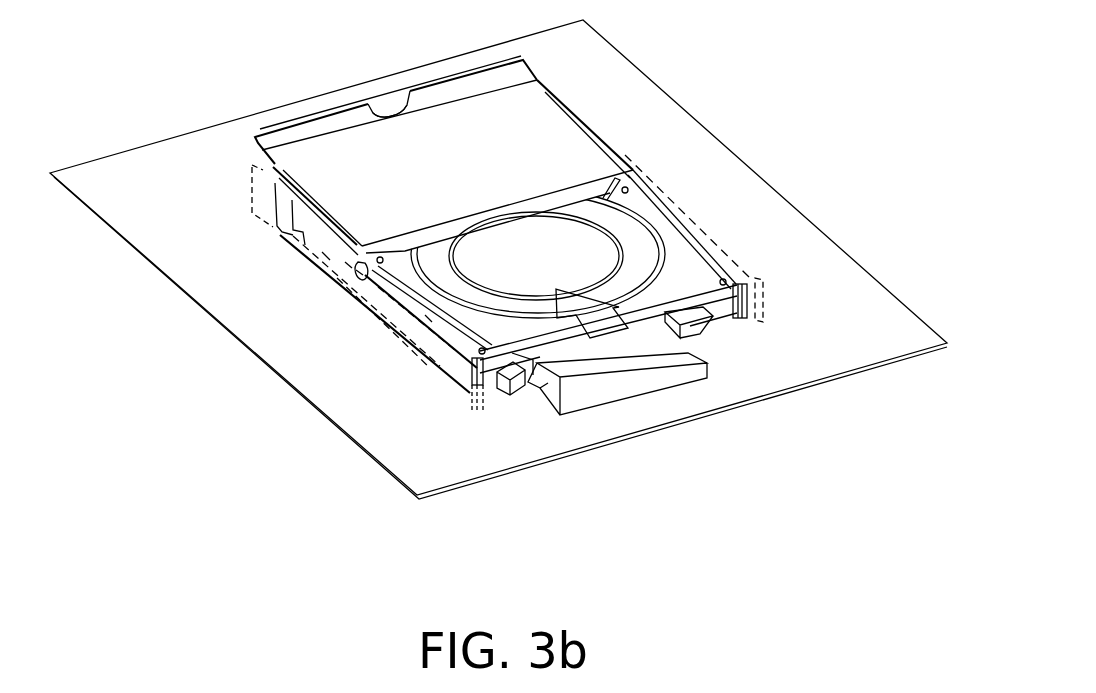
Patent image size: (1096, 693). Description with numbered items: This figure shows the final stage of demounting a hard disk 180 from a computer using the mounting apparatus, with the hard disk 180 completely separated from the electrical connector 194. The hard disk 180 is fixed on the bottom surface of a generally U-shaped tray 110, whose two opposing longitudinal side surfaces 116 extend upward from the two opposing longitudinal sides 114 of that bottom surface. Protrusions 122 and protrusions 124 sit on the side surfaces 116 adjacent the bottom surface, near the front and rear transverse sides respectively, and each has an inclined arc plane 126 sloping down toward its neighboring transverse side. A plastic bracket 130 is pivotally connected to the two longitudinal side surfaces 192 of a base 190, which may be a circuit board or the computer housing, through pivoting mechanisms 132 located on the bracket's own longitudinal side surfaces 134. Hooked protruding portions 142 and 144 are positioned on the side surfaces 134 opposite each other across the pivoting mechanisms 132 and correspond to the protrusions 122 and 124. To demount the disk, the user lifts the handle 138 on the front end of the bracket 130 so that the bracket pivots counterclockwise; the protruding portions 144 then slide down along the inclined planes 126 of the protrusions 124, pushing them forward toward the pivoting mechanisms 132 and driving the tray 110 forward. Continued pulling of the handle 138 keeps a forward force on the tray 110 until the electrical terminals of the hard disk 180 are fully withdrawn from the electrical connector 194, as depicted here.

The tray 110 is at (742, 341).
The longitudinal sides 114 is at (350, 265).
The longitudinal side surfaces 116 is at (330, 255).
The protrusions 122 is at (297, 228).
The protrusions 124 is at (460, 383).
The inclined arc plane 126 is at (300, 250).
The plastic bracket 130 is at (624, 106).
The pivoting mechanisms 132 is at (360, 278).
The longitudinal side surfaces 134 is at (430, 318).
The handle 138 is at (440, 92).
The hooked protruding portions 142 is at (277, 203).
The hooked protruding portions 144 is at (470, 380).
The hard disk 180 is at (683, 274).
The base 190 is at (733, 116).
The longitudinal side surfaces 192 is at (257, 170).
The electrical connector 194 is at (633, 360).